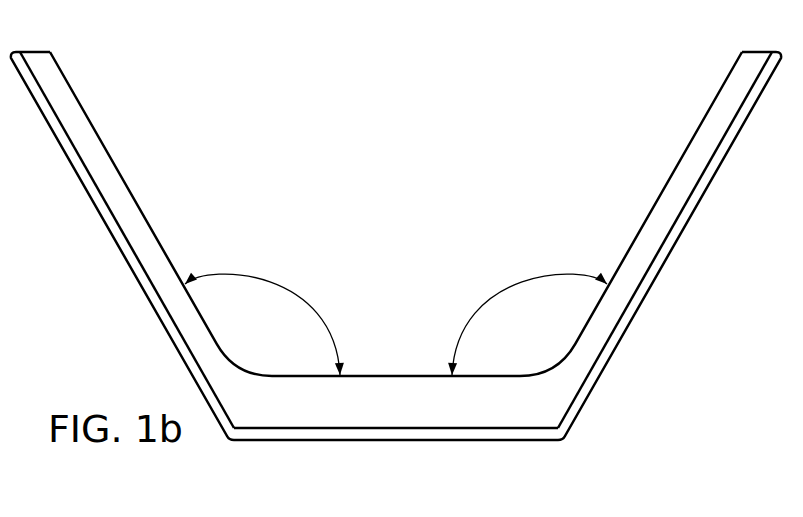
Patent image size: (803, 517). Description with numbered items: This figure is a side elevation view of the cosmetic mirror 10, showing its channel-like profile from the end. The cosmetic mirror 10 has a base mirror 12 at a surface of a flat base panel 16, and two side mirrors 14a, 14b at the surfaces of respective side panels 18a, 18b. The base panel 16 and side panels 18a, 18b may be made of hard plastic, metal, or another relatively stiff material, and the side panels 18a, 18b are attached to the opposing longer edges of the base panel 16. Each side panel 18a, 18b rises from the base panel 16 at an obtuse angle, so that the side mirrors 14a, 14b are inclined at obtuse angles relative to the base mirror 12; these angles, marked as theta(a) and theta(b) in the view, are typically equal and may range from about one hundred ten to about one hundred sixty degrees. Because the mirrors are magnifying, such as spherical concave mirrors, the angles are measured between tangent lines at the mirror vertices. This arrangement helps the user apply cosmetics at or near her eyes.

The cosmetic mirror 10 is at (519, 98).
The base mirror 12 is at (397, 376).
The side mirror 14a is at (678, 163).
The side mirror 14b is at (112, 160).
The base panel 16 is at (388, 440).
The side panel 18a is at (671, 247).
The side panel 18b is at (121, 247).